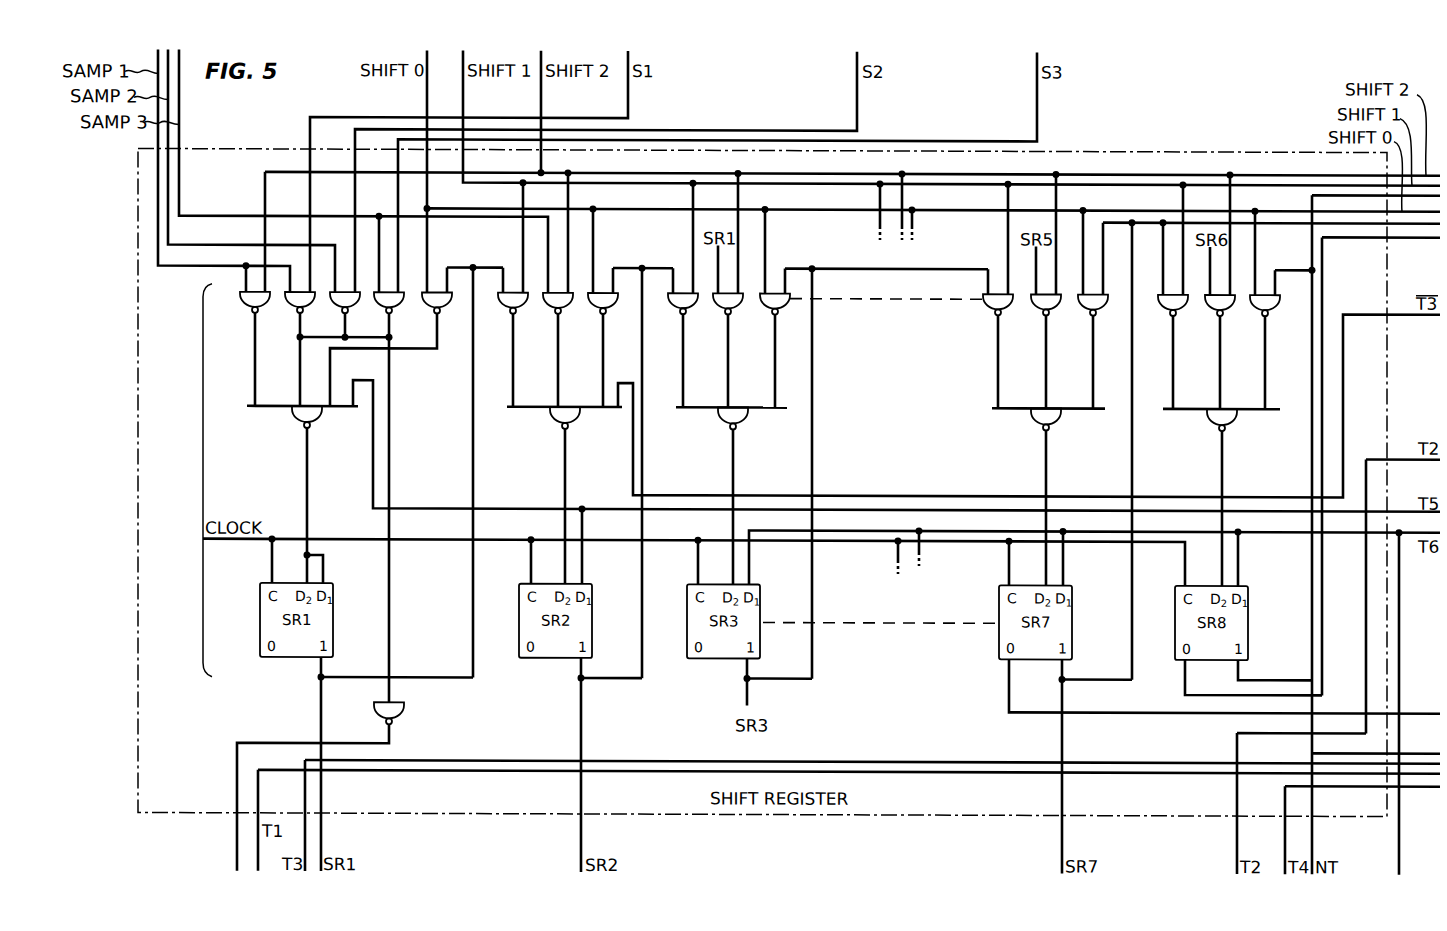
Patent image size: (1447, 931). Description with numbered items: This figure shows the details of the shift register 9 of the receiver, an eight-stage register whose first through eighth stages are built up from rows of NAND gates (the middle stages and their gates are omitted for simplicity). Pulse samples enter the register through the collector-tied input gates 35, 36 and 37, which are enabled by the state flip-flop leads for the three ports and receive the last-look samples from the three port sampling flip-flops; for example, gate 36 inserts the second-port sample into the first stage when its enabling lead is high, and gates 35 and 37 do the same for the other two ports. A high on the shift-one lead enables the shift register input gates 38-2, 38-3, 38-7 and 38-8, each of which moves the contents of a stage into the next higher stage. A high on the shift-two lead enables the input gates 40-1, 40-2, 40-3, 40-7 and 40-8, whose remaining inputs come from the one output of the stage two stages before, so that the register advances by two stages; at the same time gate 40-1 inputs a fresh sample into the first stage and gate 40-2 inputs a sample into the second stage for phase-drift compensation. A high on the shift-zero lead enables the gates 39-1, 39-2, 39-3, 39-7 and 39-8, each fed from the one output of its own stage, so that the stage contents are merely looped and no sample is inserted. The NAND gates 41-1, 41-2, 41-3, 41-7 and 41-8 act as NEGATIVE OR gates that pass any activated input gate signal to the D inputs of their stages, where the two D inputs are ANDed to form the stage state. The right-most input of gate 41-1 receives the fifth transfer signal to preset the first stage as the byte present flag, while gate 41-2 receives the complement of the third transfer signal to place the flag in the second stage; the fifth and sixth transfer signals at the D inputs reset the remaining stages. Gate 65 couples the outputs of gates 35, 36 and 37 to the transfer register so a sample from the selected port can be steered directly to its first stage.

The shift register 9 is at (139, 473).
The input gate 35 is at (306, 307).
The input gate 36 is at (351, 307).
The input gate 37 is at (396, 307).
The shift register input gate 38-2 is at (502, 308).
The shift register input gate 38-3 is at (671, 308).
The shift register input gate 38-7 is at (980, 309).
The shift register input gate 38-8 is at (1162, 310).
The shift register gate 39-1 is at (450, 307).
The shift register gate 39-2 is at (592, 308).
The shift register gate 39-3 is at (763, 308).
The shift register gate 39-7 is at (1080, 309).
The shift register gate 39-8 is at (1279, 310).
The shift register input gate 40-1 is at (238, 307).
The shift register input gate 40-2 is at (547, 308).
The shift register input gate 40-3 is at (715, 308).
The shift register input gate 40-7 is at (1033, 309).
The shift register input gate 40-8 is at (1208, 310).
The NAND gate 41-1 is at (324, 417).
The NAND gate 41-2 is at (548, 418).
The NAND gate 41-3 is at (716, 418).
The NAND gate 41-7 is at (1026, 419).
The NAND gate 41-8 is at (1240, 420).
The gate 65 is at (397, 714).